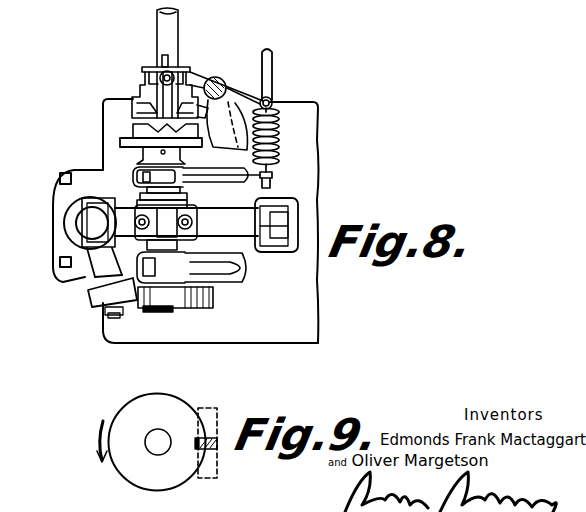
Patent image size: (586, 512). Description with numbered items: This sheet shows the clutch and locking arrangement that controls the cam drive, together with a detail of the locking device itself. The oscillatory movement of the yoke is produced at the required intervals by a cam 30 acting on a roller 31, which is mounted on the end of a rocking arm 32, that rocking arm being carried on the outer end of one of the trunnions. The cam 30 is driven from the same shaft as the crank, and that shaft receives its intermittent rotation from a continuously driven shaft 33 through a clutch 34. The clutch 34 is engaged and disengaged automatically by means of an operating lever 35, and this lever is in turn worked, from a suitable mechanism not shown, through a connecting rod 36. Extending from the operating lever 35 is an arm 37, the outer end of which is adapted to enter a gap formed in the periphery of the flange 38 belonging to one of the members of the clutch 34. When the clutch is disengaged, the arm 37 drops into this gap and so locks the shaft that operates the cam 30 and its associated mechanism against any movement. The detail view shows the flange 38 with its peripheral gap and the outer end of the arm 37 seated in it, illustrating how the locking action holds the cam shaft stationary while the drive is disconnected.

In FIG. 8, the cam 30 is at (190, 293).
In FIG. 8, the roller 31 is at (83, 297).
In FIG. 8, the rocking arm 32 is at (103, 263).
In FIG. 8, the continuously driven shaft 33 is at (168, 33).
In FIG. 8, the clutch 34 is at (135, 99).
In FIG. 8, the operating lever 35 is at (198, 82).
In FIG. 8, the connecting rod 36 is at (268, 62).
In FIG. 9, the arm 37 is at (217, 448).
In FIG. 8, the flange 38 is at (125, 143).
In FIG. 9, the flange 38 is at (120, 422).